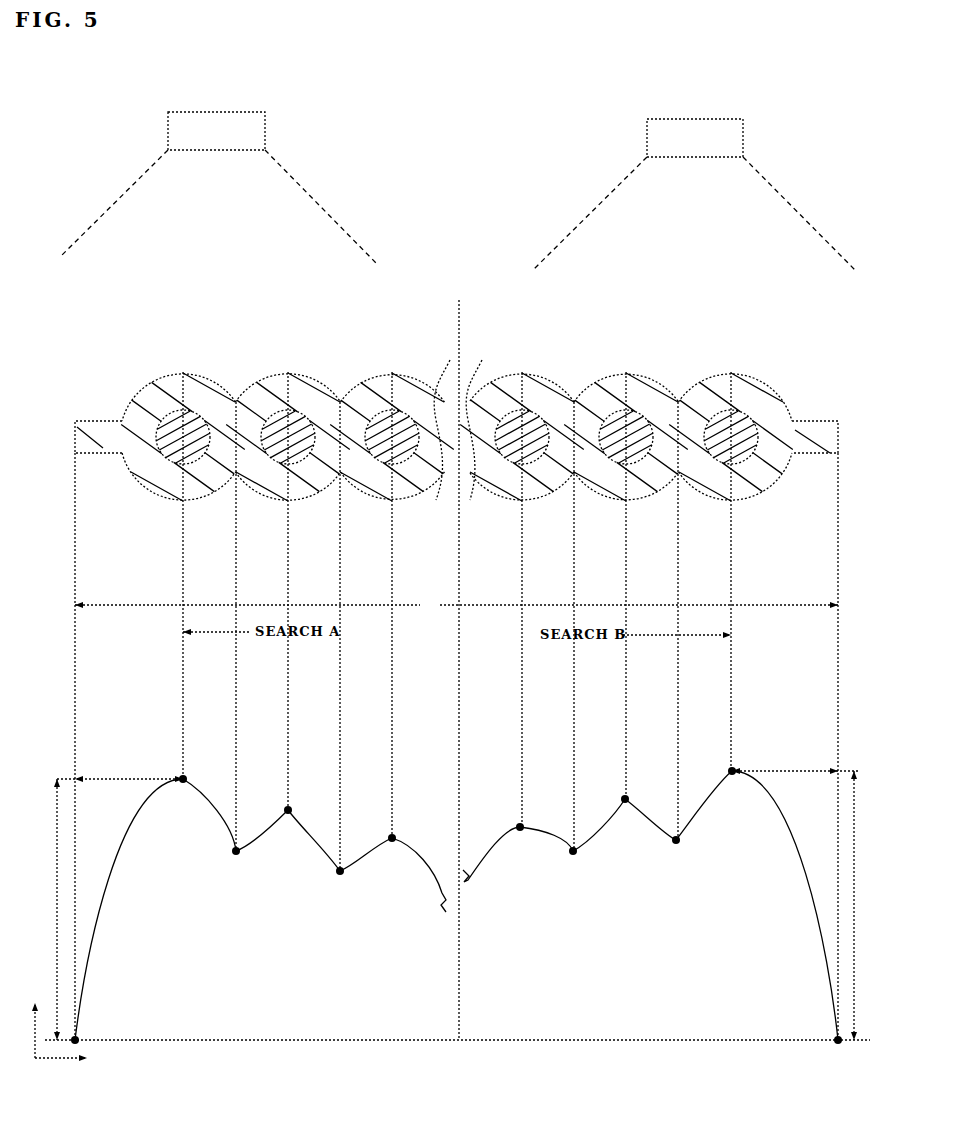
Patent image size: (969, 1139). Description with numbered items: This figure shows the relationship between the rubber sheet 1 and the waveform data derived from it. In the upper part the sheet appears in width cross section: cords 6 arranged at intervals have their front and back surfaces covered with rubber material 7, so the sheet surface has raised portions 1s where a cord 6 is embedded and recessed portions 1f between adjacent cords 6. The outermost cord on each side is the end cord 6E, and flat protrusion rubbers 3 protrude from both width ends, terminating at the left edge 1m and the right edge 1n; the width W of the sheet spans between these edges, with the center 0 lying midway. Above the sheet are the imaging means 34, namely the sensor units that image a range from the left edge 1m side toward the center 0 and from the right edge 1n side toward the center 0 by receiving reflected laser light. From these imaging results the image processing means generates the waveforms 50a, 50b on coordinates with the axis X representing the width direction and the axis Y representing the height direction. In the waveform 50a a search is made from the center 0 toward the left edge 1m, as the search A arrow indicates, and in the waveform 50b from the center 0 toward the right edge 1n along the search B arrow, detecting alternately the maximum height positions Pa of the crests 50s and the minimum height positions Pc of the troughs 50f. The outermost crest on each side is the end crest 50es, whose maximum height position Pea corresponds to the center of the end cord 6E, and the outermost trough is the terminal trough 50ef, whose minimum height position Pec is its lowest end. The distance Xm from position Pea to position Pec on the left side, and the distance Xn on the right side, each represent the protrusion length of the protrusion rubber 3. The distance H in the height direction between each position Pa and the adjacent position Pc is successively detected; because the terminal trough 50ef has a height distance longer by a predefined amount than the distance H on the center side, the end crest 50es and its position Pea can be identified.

The search window (30a, 30b) 34 is at (246, 130).
The rubber sheet 1 is at (96, 314).
The center 0 is at (459, 657).
The raised portion 1s is at (183, 372).
The recessed portion 1f is at (236, 401).
The left edge 1m is at (66, 421).
The right edge 1n is at (845, 421).
The protrusion rubber 3 is at (100, 453).
The rubber material 7 is at (140, 416).
The cord 6 is at (286, 466).
The end cord 6E is at (181, 466).
The width W is at (456, 605).
The waveform 50a is at (130, 678).
The waveform 50b is at (785, 678).
The maximum height position Pa is at (289, 808).
The maximum height position of the end crest Pea is at (183, 777).
The minimum height position Pc is at (235, 855).
The minimum height position of the terminal trough Pec is at (80, 1036).
The crest 50s is at (308, 832).
The end crest 50es is at (207, 802).
The trough 50f is at (221, 823).
The terminal trough 50ef is at (95, 932).
The distance Xm is at (135, 779).
The distance Xn is at (756, 771).
The distance H is at (461, 905).
The X axis X is at (70, 1059).
The Y axis Y is at (35, 1020).